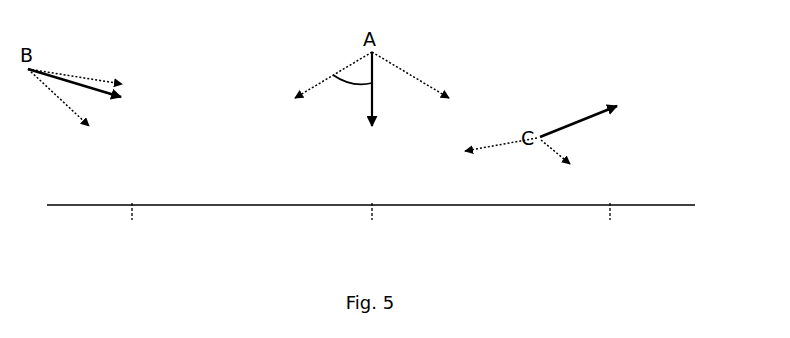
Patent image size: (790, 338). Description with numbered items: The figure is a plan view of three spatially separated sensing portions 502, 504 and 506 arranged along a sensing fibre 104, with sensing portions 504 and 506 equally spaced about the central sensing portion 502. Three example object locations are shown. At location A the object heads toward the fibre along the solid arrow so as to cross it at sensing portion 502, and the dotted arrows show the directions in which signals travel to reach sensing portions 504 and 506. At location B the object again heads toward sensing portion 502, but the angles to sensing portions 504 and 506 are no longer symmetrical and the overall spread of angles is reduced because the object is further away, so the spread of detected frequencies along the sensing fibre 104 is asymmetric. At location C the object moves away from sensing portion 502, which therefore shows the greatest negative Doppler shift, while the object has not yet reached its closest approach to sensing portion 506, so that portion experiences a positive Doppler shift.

The sensing fibre 104 is at (647, 205).
The sensing portion 502 is at (368, 228).
The sensing portion 504 is at (128, 228).
The sensing portion 506 is at (607, 228).